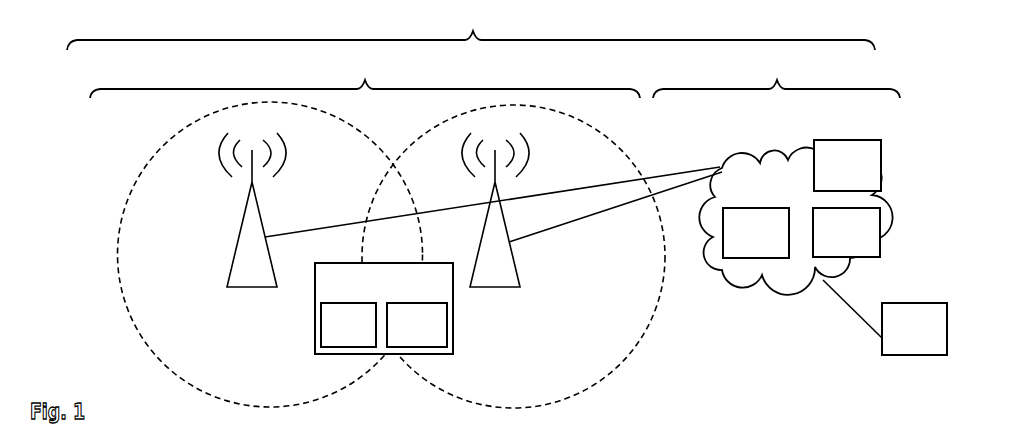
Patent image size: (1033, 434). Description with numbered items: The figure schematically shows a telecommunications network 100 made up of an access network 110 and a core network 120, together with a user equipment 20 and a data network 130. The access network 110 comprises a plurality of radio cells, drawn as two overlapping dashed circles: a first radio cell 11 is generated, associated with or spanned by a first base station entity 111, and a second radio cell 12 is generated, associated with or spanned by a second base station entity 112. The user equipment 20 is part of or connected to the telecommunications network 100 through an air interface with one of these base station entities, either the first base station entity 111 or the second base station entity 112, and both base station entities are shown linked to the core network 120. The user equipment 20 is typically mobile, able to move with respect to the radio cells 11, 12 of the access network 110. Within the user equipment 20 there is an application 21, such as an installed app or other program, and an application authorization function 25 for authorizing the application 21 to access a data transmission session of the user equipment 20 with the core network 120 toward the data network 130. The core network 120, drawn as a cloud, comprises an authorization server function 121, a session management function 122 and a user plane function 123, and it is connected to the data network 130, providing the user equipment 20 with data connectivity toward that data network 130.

The telecommunications network 100 is at (471, 28).
The access network 110 is at (365, 74).
The core network 120 is at (776, 173).
The first base station entity 111 is at (252, 210).
The second base station entity 112 is at (495, 210).
The first radio cell 11 is at (168, 365).
The second radio cell 12 is at (640, 345).
The user equipment 20 is at (384, 308).
The application 21 is at (348, 325).
The application authorization function 25 is at (417, 325).
The authorization server function 121 is at (847, 165).
The session management function 122 is at (846, 232).
The user plane function 123 is at (756, 233).
The data network 130 is at (914, 329).